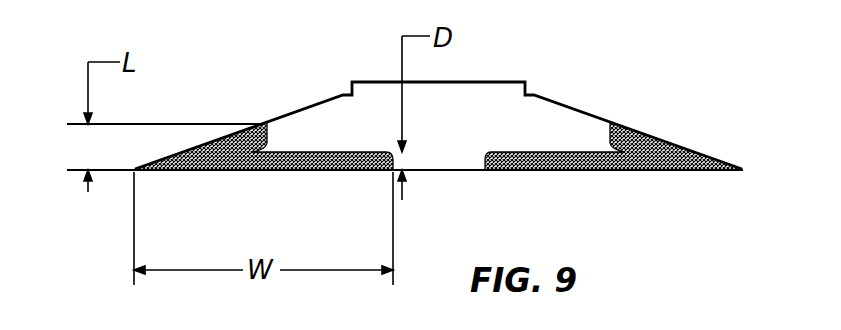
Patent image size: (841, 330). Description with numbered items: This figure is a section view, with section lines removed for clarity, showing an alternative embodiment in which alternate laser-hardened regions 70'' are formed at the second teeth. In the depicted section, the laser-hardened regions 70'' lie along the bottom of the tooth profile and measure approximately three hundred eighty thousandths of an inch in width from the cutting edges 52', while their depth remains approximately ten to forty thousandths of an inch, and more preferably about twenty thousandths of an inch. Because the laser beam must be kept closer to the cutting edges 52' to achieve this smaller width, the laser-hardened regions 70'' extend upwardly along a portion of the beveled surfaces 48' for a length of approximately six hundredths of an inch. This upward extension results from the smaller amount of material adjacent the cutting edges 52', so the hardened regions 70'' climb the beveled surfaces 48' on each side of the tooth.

The beveled surfaces 48' is at (438, 116).
The laser-hardened regions 70'' is at (438, 170).
The cutting edges 52' is at (416, 214).